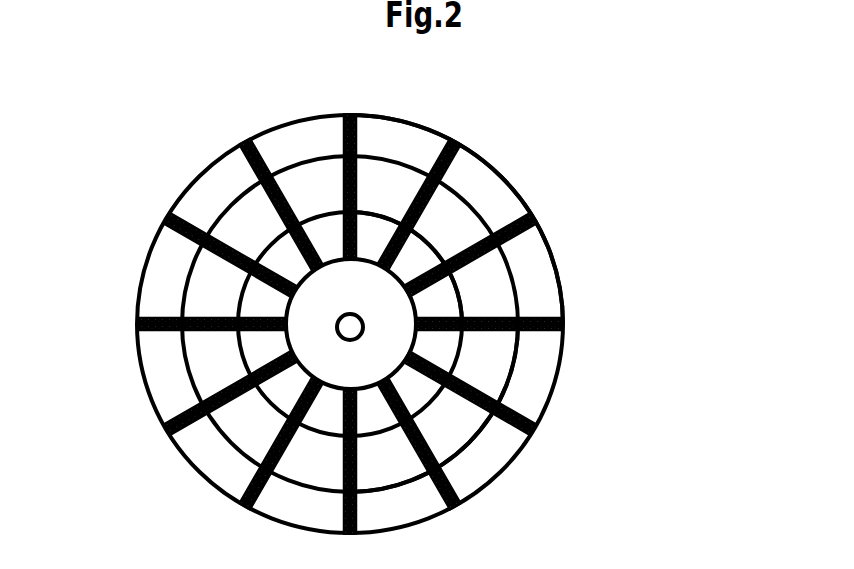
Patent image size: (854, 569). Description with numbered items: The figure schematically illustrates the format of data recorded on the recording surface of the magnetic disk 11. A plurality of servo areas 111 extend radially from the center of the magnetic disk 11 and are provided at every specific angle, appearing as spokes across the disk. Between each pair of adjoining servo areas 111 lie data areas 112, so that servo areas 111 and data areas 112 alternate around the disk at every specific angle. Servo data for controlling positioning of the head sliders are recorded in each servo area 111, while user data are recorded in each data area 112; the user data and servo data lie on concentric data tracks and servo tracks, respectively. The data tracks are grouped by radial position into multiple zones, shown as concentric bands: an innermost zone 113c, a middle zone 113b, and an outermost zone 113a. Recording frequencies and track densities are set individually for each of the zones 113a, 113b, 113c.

The magnetic disk 11 is at (137, 290).
The servo area 111 is at (541, 218).
The data area 112 is at (485, 190).
The zone 113a is at (537, 370).
The zone 113b is at (450, 427).
The zone 113c is at (445, 305).